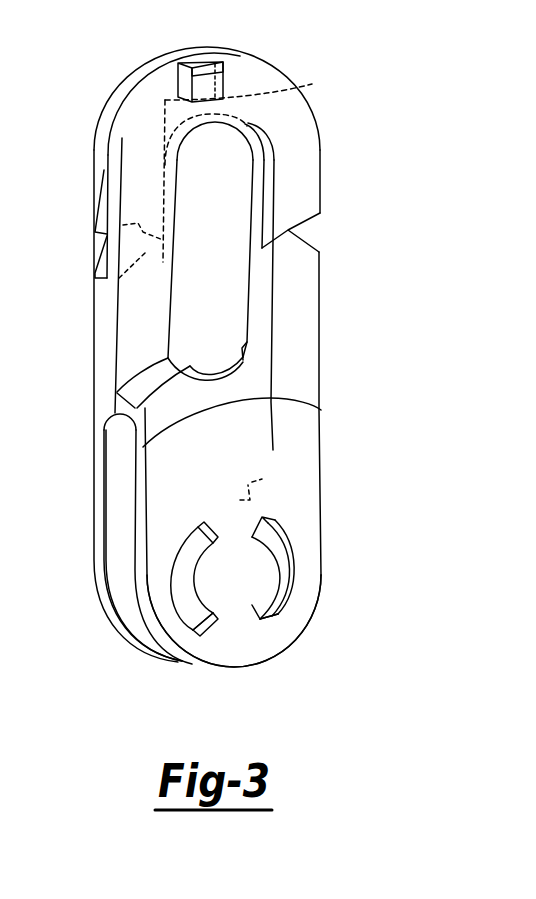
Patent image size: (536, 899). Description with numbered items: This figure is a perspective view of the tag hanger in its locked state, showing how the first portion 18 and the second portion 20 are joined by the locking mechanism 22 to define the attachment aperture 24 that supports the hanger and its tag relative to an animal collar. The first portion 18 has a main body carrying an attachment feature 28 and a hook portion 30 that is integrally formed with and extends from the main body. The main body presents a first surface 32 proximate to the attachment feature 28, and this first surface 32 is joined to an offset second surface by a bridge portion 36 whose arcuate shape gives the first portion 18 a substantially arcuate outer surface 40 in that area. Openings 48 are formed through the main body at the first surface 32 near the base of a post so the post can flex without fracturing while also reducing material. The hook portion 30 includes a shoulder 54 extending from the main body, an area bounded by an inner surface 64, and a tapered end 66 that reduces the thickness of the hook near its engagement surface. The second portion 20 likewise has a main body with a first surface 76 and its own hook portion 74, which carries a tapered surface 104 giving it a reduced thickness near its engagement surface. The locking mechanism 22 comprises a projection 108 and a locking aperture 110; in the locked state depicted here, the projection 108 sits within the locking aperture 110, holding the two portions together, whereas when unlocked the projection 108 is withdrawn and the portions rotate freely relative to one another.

The first portion 18 is at (296, 460).
The second portion 20 is at (92, 452).
The locking mechanism 22 is at (223, 67).
The attachment aperture 24 is at (230, 193).
The attachment feature 28 is at (250, 578).
The hook portion 30 is at (104, 128).
The first surface 32 is at (262, 479).
The bridge portion 36 is at (308, 402).
The substantially arcuate outer surface 40 is at (225, 393).
The openings 48 is at (193, 610).
The shoulder 54 is at (297, 290).
The inner surface 64 is at (253, 250).
The tapered end 66 is at (163, 262).
The hook portion 74 is at (187, 123).
The first surface 76 is at (110, 506).
The tapered surface 104 is at (321, 213).
The projection 108 is at (170, 78).
The locking aperture 110 is at (255, 167).